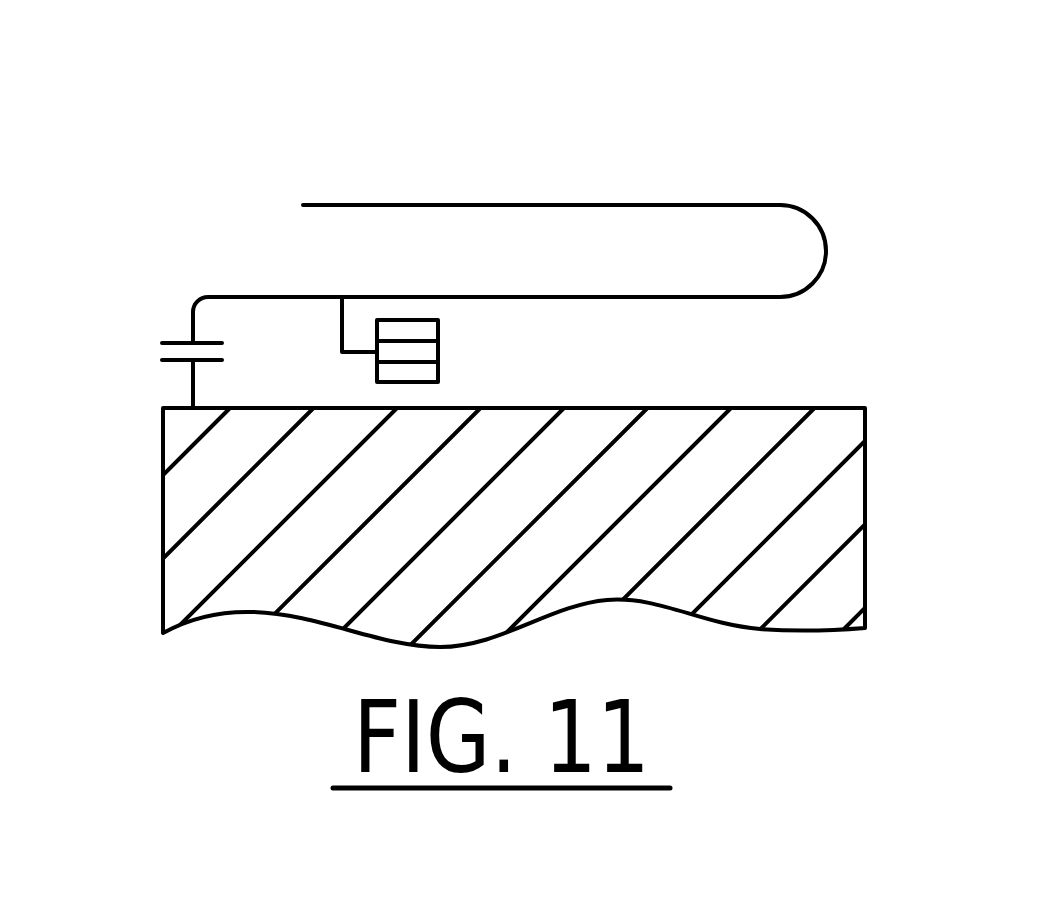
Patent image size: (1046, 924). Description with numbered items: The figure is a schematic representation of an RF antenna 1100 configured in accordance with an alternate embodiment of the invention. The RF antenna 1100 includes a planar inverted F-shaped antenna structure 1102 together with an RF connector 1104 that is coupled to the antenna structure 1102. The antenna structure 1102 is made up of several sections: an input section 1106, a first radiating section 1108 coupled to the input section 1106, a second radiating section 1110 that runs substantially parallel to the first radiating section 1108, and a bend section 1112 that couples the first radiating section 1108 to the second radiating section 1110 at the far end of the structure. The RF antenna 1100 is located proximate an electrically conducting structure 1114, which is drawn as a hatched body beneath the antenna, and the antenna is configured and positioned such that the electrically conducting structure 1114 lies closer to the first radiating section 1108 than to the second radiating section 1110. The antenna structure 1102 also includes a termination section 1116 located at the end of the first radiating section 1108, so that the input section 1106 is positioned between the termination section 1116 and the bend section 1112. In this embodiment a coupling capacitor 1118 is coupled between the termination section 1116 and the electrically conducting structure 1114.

The RF antenna 1100 is at (572, 52).
The planar inverted F-shaped antenna structure 1102 is at (246, 154).
The RF connector 1104 is at (438, 351).
The input section 1106 is at (338, 308).
The first radiating section 1108 is at (567, 297).
The second radiating section 1110 is at (615, 204).
The bend section 1112 is at (827, 257).
The electrically conducting structure 1114 is at (160, 568).
The termination section 1116 is at (187, 306).
The coupling capacitor 1118 is at (178, 362).